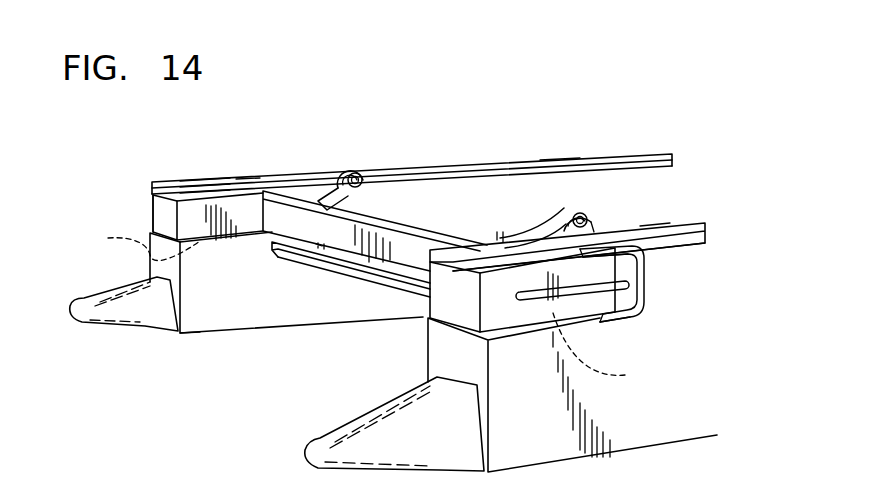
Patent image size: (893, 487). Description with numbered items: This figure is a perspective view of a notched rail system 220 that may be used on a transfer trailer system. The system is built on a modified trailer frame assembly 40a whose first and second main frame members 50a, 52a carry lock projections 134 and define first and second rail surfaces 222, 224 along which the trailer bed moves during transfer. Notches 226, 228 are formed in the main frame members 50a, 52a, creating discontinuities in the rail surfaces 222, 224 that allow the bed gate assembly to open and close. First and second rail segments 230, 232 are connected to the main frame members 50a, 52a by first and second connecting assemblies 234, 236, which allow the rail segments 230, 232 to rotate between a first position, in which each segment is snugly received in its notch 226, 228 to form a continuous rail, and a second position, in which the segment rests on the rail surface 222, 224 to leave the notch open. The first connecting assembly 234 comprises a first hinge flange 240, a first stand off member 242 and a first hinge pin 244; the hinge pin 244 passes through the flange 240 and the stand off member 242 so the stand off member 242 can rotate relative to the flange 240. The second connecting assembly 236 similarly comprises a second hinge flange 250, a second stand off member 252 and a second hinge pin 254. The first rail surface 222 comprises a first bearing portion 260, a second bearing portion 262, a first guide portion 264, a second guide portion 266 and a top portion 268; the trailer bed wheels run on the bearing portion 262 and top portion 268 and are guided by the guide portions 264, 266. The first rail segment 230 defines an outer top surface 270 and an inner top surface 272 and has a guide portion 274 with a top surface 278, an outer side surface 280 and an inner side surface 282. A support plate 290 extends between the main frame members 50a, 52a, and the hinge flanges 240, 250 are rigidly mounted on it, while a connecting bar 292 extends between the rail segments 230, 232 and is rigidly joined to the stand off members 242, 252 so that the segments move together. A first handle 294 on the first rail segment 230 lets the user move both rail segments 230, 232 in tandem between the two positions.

The trailer frame assembly 40a is at (220, 386).
The first main frame member 50a is at (625, 435).
The second main frame member 52a is at (235, 322).
The lock projection 134 is at (118, 296).
The notched rail system 220 is at (125, 174).
The first rail surface 222 is at (656, 214).
The second rail surface 224 is at (556, 148).
The notch 226 is at (606, 348).
The notch 228 is at (136, 244).
The first rail segment 230 is at (450, 308).
The second rail segment 232 is at (160, 213).
The first connecting assembly 234 is at (584, 184).
The second connecting assembly 236 is at (356, 160).
The first hinge flange 240 is at (600, 226).
The first stand off member 242 is at (533, 237).
The first hinge pin 244 is at (598, 205).
The second hinge flange 250 is at (362, 200).
The second stand off member 252 is at (320, 192).
The second hinge pin 254 is at (365, 178).
The first bearing portion 260 is at (687, 254).
The second bearing portion 262 is at (487, 178).
The first guide portion 264 is at (677, 242).
The second guide portion 266 is at (473, 174).
The top portion 268 is at (458, 170).
The outer top surface 270 is at (648, 318).
The inner top surface 272 is at (187, 184).
The guide portion 274 is at (238, 181).
The top surface 278 is at (205, 182).
The outer side surface 280 is at (573, 260).
The inner side surface 282 is at (197, 186).
The support plate 290 is at (312, 258).
The connecting bar 292 is at (375, 252).
The first handle 294 is at (585, 297).